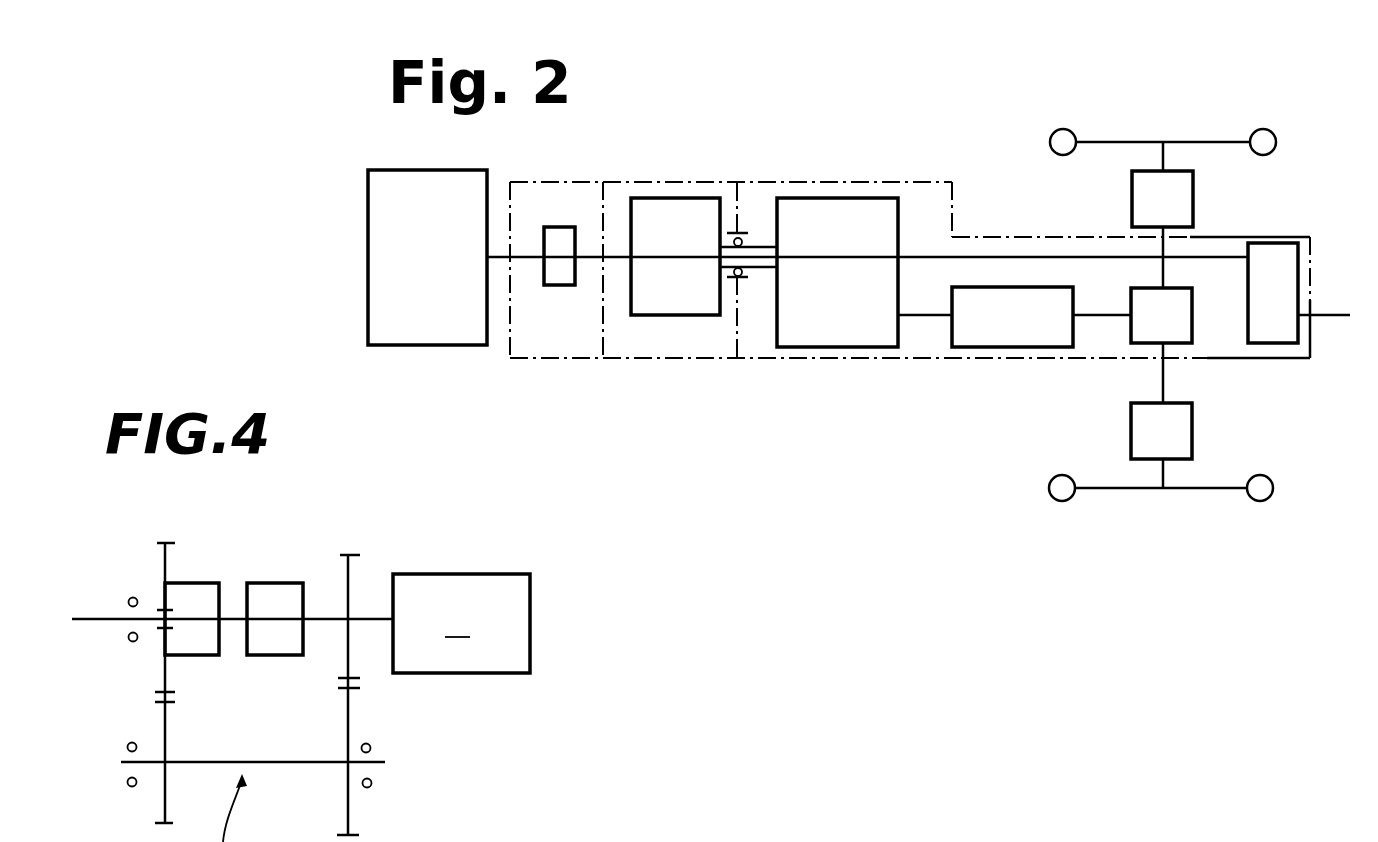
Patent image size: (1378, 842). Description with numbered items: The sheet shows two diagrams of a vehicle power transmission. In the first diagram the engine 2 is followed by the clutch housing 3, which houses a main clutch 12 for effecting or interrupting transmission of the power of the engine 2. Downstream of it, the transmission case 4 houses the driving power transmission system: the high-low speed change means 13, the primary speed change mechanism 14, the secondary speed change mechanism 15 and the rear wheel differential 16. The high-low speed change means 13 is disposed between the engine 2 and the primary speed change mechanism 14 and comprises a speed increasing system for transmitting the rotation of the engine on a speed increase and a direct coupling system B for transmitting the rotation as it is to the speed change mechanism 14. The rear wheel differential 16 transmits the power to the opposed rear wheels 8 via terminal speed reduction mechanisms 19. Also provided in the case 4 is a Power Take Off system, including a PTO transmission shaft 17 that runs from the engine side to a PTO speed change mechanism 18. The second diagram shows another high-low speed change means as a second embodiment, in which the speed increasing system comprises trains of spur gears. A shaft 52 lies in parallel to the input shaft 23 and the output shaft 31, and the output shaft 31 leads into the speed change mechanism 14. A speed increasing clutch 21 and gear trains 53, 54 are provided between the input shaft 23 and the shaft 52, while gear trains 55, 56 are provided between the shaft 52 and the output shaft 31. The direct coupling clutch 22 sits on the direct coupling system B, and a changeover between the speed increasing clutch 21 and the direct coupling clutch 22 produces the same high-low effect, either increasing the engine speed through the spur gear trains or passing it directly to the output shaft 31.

In FIG. 2, the engine 2 is at (388, 270).
In FIG. 2, the clutch housing 3 is at (538, 182).
In FIG. 2, the transmission case 4 is at (928, 182).
In FIG. 2, the rear wheels 8 is at (1260, 129).
In FIG. 2, the main clutch 12 is at (567, 285).
In FIG. 2, the high-low speed change means 13 is at (678, 222).
In FIG. 2, the primary speed change mechanism 14 is at (850, 327).
In FIG. 4, the primary speed change mechanism 14 is at (461, 623).
In FIG. 2, the secondary speed change mechanism 15 is at (1025, 335).
In FIG. 2, the rear wheel differential 16 is at (1183, 322).
In FIG. 2, the PTO transmission shaft 17 is at (987, 257).
In FIG. 2, the PTO speed change mechanism 18 is at (1285, 287).
In FIG. 2, the terminal speed reduction mechanisms 19 is at (1177, 205).
In FIG. 4, the speed increasing clutch 21 is at (200, 583).
In FIG. 4, the direct coupling clutch 22 is at (268, 593).
In FIG. 4, the input shaft 23 is at (87, 618).
In FIG. 4, the output shaft 31 is at (372, 625).
In FIG. 4, the shaft 52 is at (265, 762).
In FIG. 4, the gear train 53 is at (167, 567).
In FIG. 4, the gear train 54 is at (165, 737).
In FIG. 4, the gear train 55 is at (350, 722).
In FIG. 4, the gear train 56 is at (353, 590).
In FIG. 4, the direct coupling system B is at (308, 585).